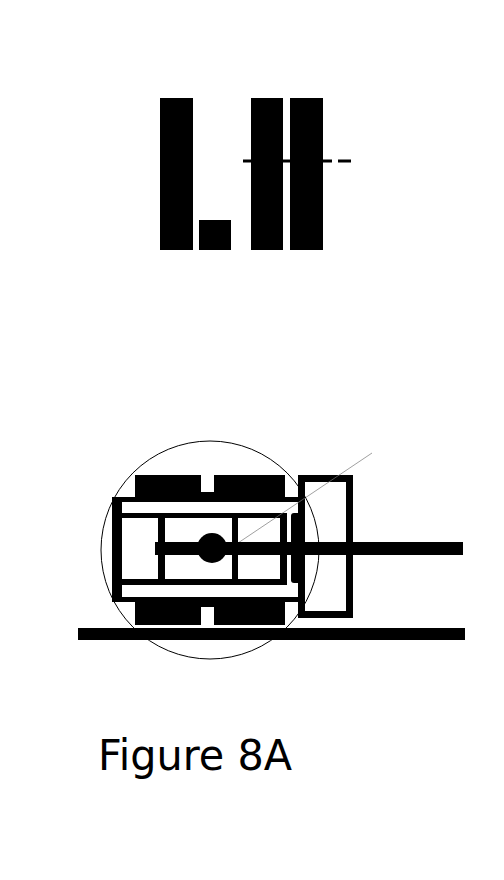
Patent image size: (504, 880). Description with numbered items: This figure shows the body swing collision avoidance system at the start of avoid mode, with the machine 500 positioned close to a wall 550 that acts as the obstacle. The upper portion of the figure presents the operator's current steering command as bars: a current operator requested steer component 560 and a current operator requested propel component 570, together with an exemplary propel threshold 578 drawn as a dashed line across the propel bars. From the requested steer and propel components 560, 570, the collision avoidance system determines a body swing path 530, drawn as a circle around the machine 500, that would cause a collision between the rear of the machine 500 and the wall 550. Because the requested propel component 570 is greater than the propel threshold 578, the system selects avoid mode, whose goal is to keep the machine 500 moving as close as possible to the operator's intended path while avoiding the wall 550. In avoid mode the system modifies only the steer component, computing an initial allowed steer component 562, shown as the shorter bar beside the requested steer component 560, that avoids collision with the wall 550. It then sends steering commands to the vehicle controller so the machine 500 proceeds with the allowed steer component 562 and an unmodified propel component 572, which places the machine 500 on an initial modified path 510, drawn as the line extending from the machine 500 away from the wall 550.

The machine 500 is at (318, 458).
The initial modified path 510 is at (375, 540).
The body swing path 530 is at (190, 442).
The wall 550 is at (318, 642).
The current operator requested steer component 560 is at (178, 95).
The initial allowed steer component 562 is at (213, 248).
The current operator requested propel component 570 is at (263, 95).
The unmodified propel component 572 is at (303, 248).
The propel threshold 578 is at (335, 158).